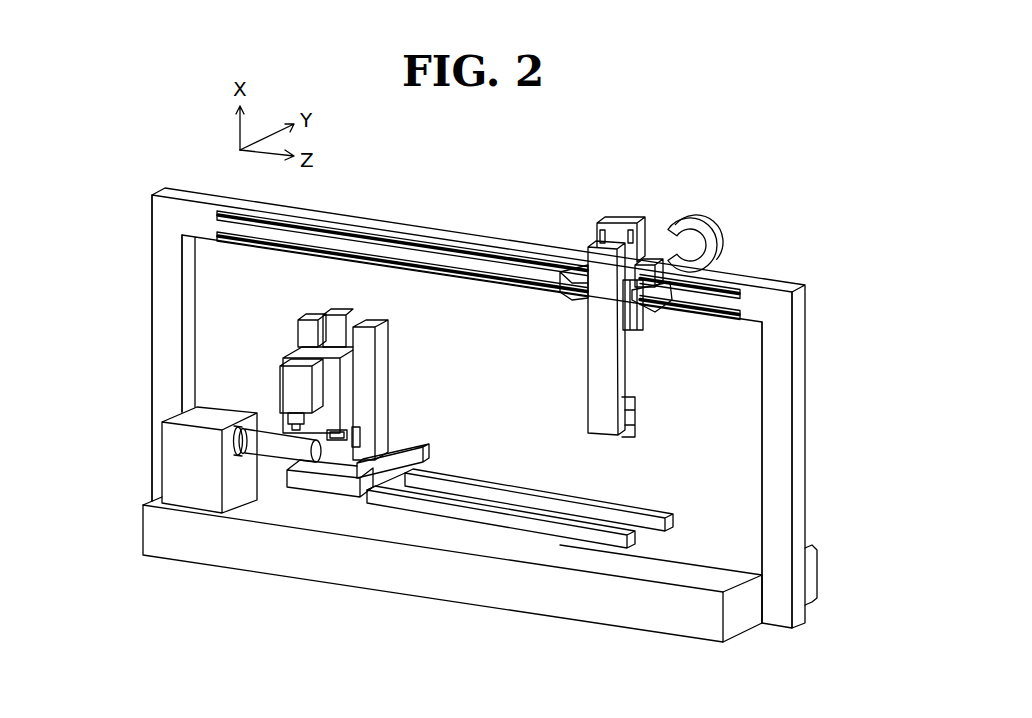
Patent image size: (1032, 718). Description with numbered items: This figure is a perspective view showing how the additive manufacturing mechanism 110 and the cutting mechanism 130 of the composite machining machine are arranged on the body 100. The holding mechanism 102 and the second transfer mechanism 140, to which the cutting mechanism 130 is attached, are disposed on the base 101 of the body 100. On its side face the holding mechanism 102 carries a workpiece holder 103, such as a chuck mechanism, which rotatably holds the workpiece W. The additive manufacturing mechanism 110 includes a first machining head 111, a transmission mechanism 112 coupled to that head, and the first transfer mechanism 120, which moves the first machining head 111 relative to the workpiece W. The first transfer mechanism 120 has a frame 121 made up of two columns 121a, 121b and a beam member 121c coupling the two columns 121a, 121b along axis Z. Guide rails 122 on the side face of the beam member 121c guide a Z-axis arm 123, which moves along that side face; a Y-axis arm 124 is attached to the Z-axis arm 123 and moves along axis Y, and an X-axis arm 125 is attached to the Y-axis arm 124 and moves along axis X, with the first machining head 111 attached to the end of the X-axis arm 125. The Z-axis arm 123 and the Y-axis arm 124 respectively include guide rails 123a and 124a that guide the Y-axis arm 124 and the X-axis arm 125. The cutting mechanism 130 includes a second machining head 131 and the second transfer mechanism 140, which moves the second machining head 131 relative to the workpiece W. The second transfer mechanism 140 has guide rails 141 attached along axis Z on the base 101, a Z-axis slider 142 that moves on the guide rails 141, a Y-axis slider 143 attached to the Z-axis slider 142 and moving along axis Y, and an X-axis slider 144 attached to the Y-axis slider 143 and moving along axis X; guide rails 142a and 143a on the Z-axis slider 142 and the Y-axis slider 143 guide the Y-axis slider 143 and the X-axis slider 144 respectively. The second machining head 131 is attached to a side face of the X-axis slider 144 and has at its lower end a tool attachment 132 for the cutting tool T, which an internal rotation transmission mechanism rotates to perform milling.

The body 100 is at (355, 608).
The base 101 is at (503, 600).
The holding mechanism 102 is at (180, 473).
The workpiece holder 103 is at (242, 450).
The additive manufacturing mechanism 110 is at (652, 442).
The first machining head 111 is at (622, 437).
The transmission mechanism 112 is at (700, 220).
The first transfer mechanism 120 is at (194, 166).
The frame 121 is at (368, 226).
The column 121a is at (157, 272).
The column 121b is at (797, 370).
The beam member 121c is at (480, 238).
The guide rails 122 is at (717, 290).
The Z-axis arm 123 is at (660, 300).
The guide rails 123a is at (578, 278).
The Y-axis arm 124 is at (620, 230).
The guide rails 124a is at (601, 238).
The X-axis arm 125 is at (607, 372).
The cutting mechanism 130 is at (262, 387).
The second machining head 131 is at (263, 368).
The tool attachment 132 is at (290, 418).
The second transfer mechanism 140 is at (434, 357).
The guide rails 141 is at (527, 497).
The Z-axis slider 142 is at (340, 485).
The guide rails 142a is at (413, 445).
The Y-axis slider 143 is at (388, 405).
The guide rails 143a is at (303, 340).
The X-axis slider 144 is at (347, 380).
The cutting tool T is at (362, 433).
The workpiece W is at (273, 449).